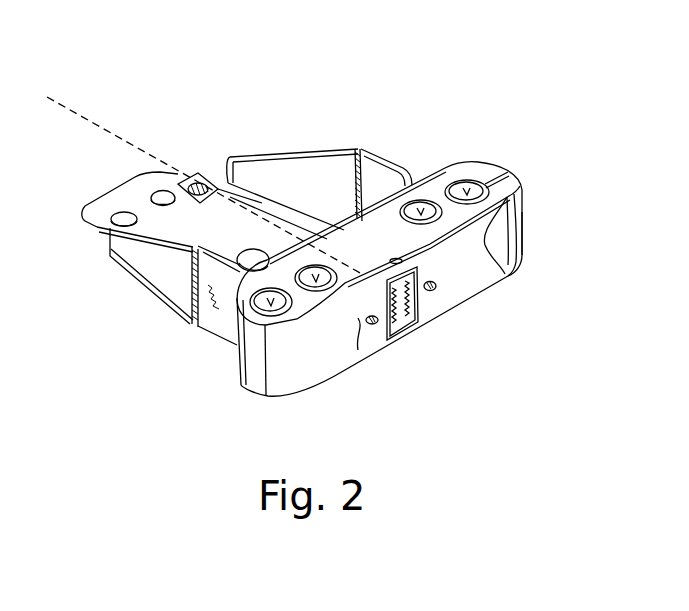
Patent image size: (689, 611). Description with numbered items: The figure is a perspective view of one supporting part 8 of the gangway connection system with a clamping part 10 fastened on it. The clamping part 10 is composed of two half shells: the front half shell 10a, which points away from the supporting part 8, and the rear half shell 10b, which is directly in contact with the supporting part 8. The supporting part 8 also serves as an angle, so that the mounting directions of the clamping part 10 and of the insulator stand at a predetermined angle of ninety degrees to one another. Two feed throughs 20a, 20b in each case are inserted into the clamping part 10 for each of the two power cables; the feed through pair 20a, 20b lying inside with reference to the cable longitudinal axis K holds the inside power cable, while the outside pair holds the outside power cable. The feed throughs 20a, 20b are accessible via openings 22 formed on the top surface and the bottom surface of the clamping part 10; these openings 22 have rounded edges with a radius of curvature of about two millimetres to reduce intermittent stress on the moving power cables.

The supporting part 8 is at (337, 144).
The clamping part 10 is at (419, 337).
The front half shell 10a is at (487, 292).
The rear half shell 10b is at (487, 163).
The feed through 20a is at (421, 201).
The feed through 20b is at (467, 182).
The opening 22 is at (520, 216).
The cable longitudinal axis K is at (91, 122).